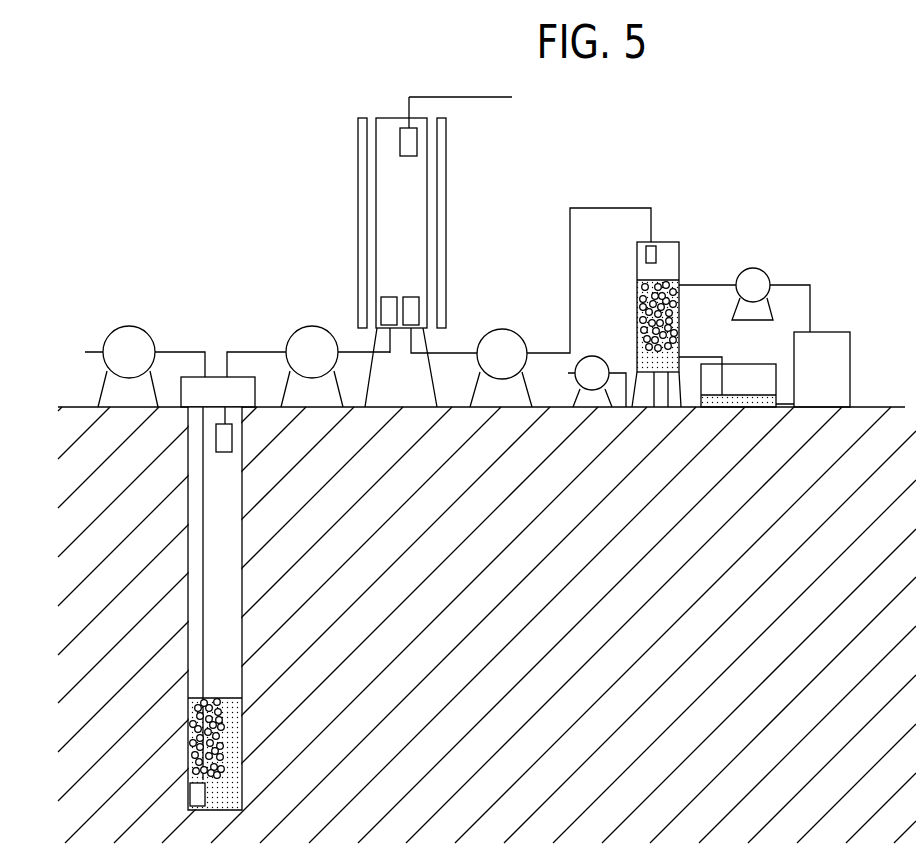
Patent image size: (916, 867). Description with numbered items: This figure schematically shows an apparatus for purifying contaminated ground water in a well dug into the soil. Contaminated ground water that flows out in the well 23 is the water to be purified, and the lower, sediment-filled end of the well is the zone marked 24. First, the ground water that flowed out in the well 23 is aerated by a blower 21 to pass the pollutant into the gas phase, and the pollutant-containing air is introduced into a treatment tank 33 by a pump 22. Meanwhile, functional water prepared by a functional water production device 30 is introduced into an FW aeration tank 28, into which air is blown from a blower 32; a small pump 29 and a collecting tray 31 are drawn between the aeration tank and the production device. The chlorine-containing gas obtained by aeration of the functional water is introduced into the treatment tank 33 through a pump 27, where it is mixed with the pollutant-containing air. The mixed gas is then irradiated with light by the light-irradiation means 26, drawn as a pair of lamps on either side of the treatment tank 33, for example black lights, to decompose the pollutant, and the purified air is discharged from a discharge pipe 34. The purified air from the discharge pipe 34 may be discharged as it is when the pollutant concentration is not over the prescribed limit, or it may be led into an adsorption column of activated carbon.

The blower 21 is at (122, 327).
The pump 22 is at (310, 335).
The well 23 is at (193, 505).
The treatment zone at bottom of well 24 is at (198, 798).
The light-irradiation means 26 is at (362, 203).
The pump 27 is at (495, 338).
The FW aeration tank 28 is at (667, 247).
The pump 29 is at (755, 273).
The functional water production device 30 is at (828, 337).
The collection tray 31 is at (738, 395).
The blower 32 is at (597, 365).
The treatment tank 33 is at (418, 192).
The discharge pipe 34 is at (512, 97).